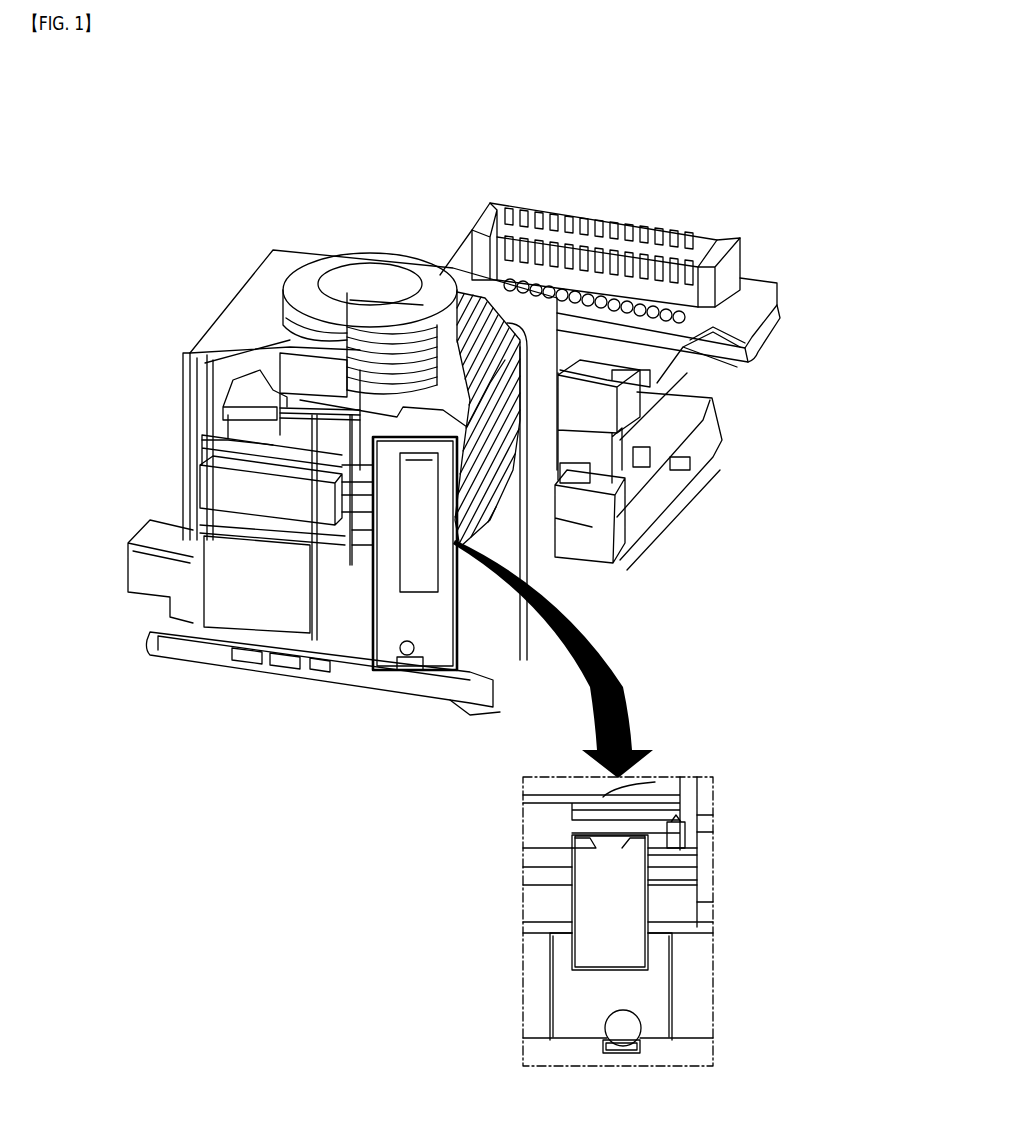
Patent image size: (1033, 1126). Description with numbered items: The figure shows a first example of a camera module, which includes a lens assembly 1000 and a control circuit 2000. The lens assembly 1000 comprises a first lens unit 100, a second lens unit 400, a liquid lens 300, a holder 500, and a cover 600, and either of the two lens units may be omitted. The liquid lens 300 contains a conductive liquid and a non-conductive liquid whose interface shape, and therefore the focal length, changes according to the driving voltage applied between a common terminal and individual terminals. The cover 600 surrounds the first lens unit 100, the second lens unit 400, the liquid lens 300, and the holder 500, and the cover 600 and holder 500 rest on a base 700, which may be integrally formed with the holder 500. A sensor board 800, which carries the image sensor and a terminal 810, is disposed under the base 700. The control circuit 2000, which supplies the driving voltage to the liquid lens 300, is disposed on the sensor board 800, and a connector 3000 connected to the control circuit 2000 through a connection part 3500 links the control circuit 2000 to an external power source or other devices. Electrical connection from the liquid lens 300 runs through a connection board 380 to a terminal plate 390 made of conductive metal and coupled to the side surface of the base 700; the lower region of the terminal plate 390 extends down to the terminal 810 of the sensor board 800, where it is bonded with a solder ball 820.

The first lens unit 100 is at (376, 318).
The liquid lens 300 is at (245, 422).
The connection board 380 is at (425, 667).
The terminal plate 390 is at (383, 593).
The second lens unit 400 is at (367, 520).
The holder 500 is at (492, 483).
The cover 600 is at (240, 300).
The base 700 is at (148, 568).
The sensor board 800 is at (505, 684).
The terminal 810 is at (410, 655).
The solder ball 820 is at (412, 657).
The lens assembly 1000 is at (590, 622).
The control circuit 2000 is at (626, 455).
The connector 3000 is at (775, 314).
The connection part 3500 is at (710, 363).